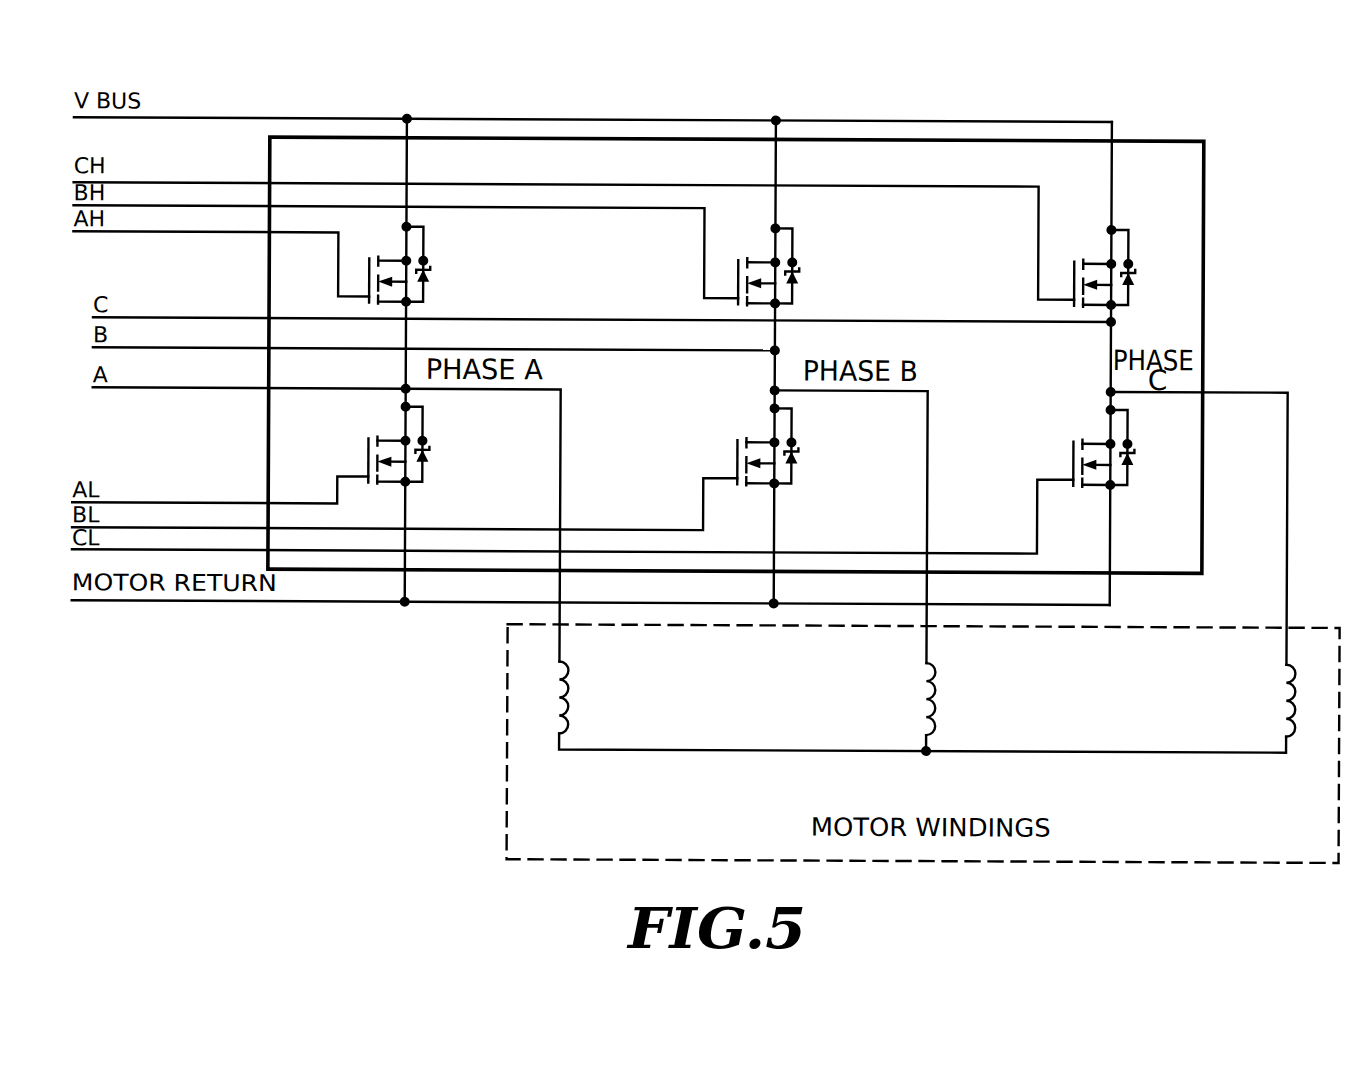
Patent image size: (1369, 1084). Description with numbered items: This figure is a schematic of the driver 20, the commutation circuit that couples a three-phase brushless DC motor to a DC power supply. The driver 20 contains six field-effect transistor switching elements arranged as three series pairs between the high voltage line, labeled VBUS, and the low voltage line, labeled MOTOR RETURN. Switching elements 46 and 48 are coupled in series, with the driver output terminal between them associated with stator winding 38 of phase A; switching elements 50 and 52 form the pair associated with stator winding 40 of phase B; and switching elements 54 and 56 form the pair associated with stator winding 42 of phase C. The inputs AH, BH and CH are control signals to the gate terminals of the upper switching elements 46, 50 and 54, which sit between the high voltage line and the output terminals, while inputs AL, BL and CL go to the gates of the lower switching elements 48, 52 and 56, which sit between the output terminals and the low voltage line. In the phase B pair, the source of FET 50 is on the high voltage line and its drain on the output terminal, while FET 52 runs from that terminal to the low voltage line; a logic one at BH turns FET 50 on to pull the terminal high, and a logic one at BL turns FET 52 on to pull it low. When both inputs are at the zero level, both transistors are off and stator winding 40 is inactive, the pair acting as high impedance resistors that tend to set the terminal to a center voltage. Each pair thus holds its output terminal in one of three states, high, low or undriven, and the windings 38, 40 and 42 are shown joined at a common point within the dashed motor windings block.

The driver 20 is at (588, 156).
The stator winding 38 is at (571, 691).
The stator winding 40 is at (938, 694).
The stator winding 42 is at (1283, 696).
The switching element 46 is at (425, 245).
The switching element 48 is at (424, 424).
The switching element 50 is at (794, 245).
The switching element 52 is at (793, 425).
The switching element 54 is at (1130, 245).
The switching element 56 is at (1130, 472).